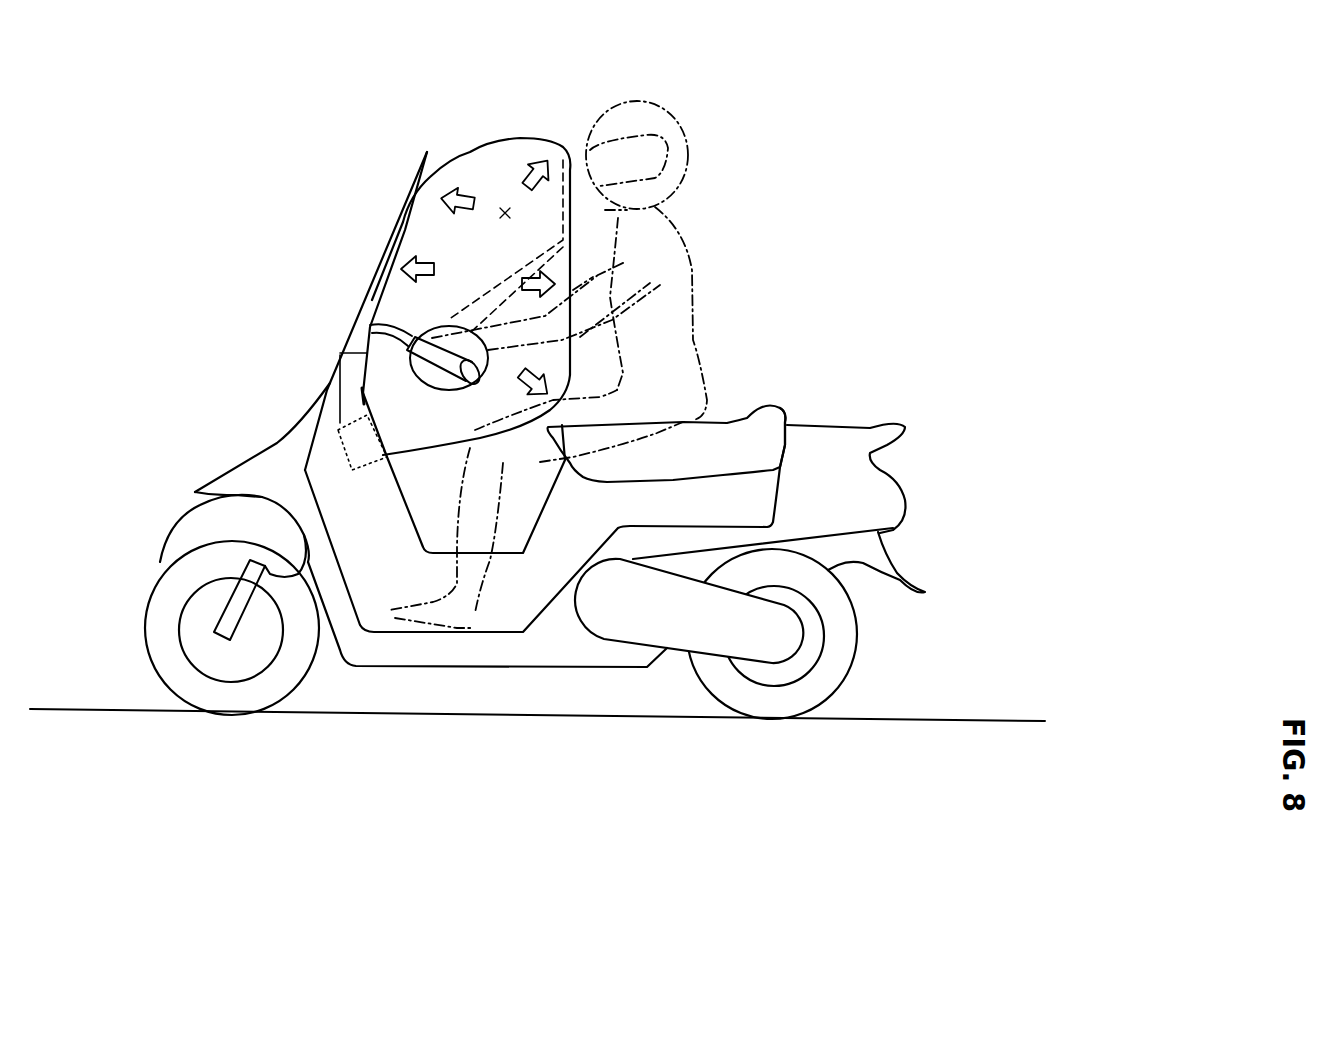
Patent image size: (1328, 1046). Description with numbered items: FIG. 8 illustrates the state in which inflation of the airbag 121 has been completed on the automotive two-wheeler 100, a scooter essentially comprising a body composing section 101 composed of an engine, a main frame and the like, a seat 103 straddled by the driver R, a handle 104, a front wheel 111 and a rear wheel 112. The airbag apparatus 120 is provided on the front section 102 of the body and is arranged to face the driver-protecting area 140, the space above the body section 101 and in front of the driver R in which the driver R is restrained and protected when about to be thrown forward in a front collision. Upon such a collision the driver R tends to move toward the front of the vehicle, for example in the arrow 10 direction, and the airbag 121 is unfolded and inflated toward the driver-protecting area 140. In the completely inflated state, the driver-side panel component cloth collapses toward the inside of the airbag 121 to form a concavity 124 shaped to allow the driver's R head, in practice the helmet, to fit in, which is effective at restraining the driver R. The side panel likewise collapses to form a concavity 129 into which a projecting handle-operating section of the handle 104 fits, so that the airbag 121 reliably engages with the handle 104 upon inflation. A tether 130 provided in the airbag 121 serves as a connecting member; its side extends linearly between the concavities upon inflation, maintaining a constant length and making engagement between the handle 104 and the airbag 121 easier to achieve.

The arrow 10 is at (690, 67).
The automotive two-wheeler 100 is at (826, 317).
The body composing section 101 is at (493, 680).
The front section 102 is at (323, 377).
The seat 103 is at (720, 435).
The handle 104 is at (404, 322).
The front wheel 111 is at (220, 692).
The rear wheel 112 is at (748, 702).
The airbag apparatus 120 is at (330, 421).
The airbag 121 is at (470, 152).
The concavity 124 is at (564, 158).
The concavity 129 is at (400, 324).
The tether 130 is at (475, 294).
The driver-protecting area 140 is at (505, 212).
The driver R is at (673, 270).